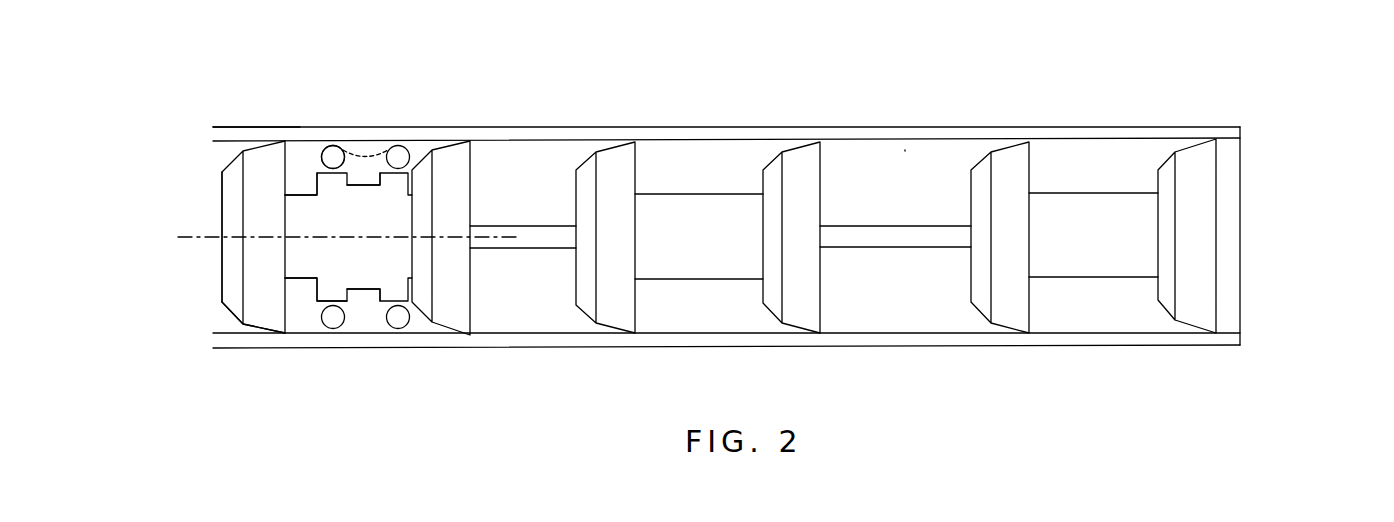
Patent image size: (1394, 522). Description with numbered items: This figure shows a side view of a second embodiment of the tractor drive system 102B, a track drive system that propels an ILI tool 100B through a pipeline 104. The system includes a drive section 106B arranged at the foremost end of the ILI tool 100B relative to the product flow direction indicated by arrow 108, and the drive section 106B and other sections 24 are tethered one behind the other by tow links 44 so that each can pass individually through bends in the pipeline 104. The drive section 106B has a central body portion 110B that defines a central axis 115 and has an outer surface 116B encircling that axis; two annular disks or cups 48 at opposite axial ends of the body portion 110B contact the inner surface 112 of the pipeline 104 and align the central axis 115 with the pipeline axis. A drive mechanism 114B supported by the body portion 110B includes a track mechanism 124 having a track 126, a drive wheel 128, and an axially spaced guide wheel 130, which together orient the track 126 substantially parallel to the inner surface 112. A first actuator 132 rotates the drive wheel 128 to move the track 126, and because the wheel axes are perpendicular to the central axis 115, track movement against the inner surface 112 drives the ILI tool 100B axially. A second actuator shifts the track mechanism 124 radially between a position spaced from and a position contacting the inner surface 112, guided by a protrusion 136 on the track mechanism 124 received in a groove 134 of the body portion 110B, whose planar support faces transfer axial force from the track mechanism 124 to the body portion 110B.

The ILI tool 100B is at (182, 113).
The tractor drive system 102B is at (203, 303).
The pipeline 104 is at (1153, 347).
The drive section 106B is at (212, 253).
The product flow direction 108 is at (1266, 243).
The central body portion 110B is at (292, 192).
The inner surface 112 is at (925, 143).
The drive mechanism 114B is at (310, 318).
The central axis 115 is at (195, 233).
The outer surface 116B is at (358, 248).
The track mechanism 124 is at (382, 341).
The track 126 is at (370, 145).
The drive wheel 128 is at (362, 150).
The guide wheel 130 is at (380, 148).
The first actuator 132 is at (333, 157).
The groove 134 is at (368, 280).
The protrusion 136 is at (375, 190).
The sections 24 is at (712, 165).
The tow links 44 is at (517, 250).
The annular disks or cups 48 is at (422, 153).